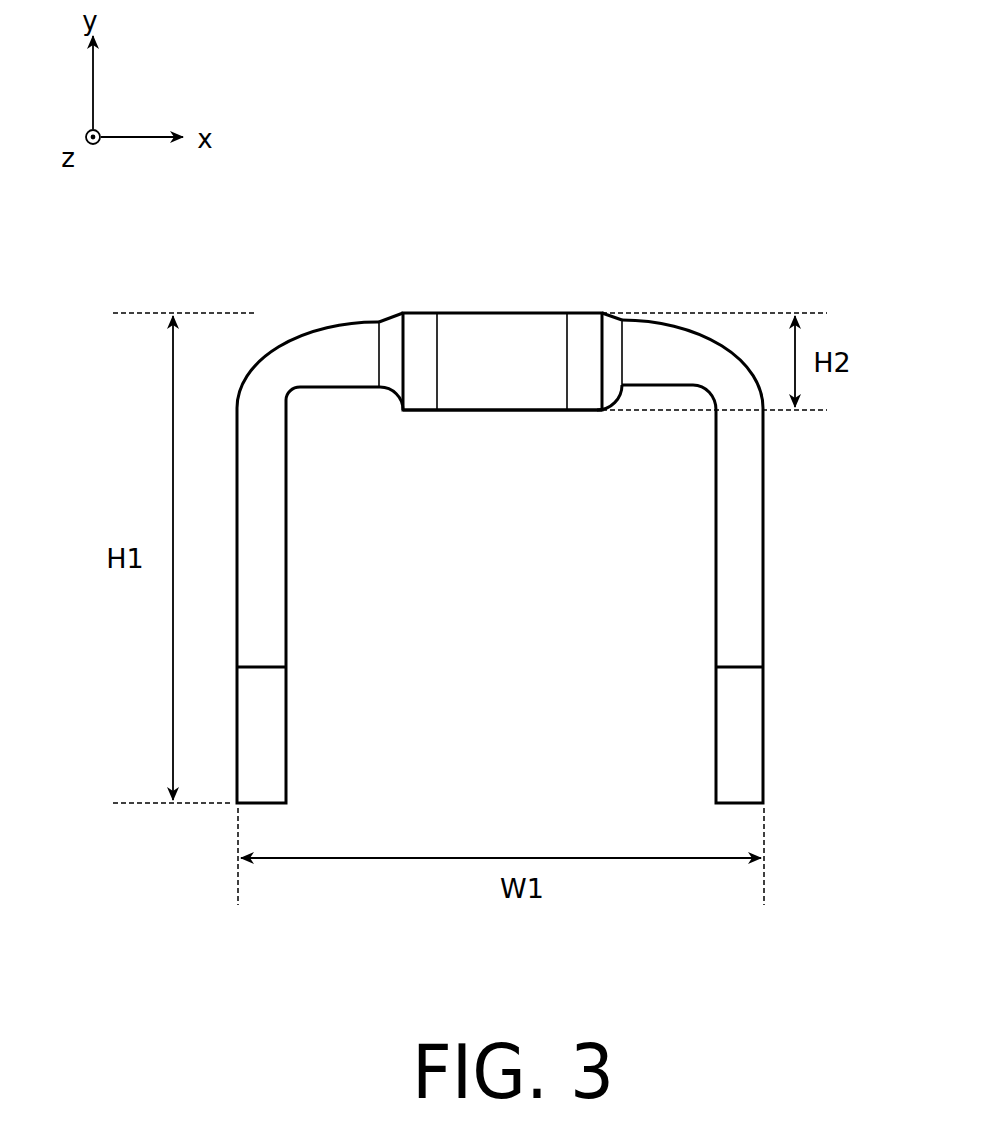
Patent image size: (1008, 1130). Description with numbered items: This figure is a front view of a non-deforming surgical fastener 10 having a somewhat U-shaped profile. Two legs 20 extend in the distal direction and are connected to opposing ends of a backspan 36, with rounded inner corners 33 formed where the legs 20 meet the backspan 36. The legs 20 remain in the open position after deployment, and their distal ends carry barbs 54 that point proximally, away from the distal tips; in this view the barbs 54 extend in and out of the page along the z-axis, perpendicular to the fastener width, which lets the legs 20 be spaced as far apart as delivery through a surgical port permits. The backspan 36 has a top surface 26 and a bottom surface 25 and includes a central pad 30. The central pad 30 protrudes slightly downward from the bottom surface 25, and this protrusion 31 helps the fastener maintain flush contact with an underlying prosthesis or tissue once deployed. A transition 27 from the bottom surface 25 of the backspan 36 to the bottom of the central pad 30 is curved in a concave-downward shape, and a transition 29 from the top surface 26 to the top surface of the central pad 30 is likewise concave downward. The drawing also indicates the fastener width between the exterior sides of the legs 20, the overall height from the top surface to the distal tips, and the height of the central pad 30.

The surgical fastener 10 is at (515, 441).
The leg 20 is at (737, 560).
The bottom surface of the backspan 25 is at (346, 399).
The top surface of the backspan 26 is at (330, 320).
The transition 27 is at (383, 405).
The transition 29 is at (403, 310).
The central pad 30 is at (490, 345).
The protrusion 31 is at (547, 427).
The inner corner 33 is at (294, 397).
The backspan 36 is at (318, 347).
The barb 54 is at (292, 669).